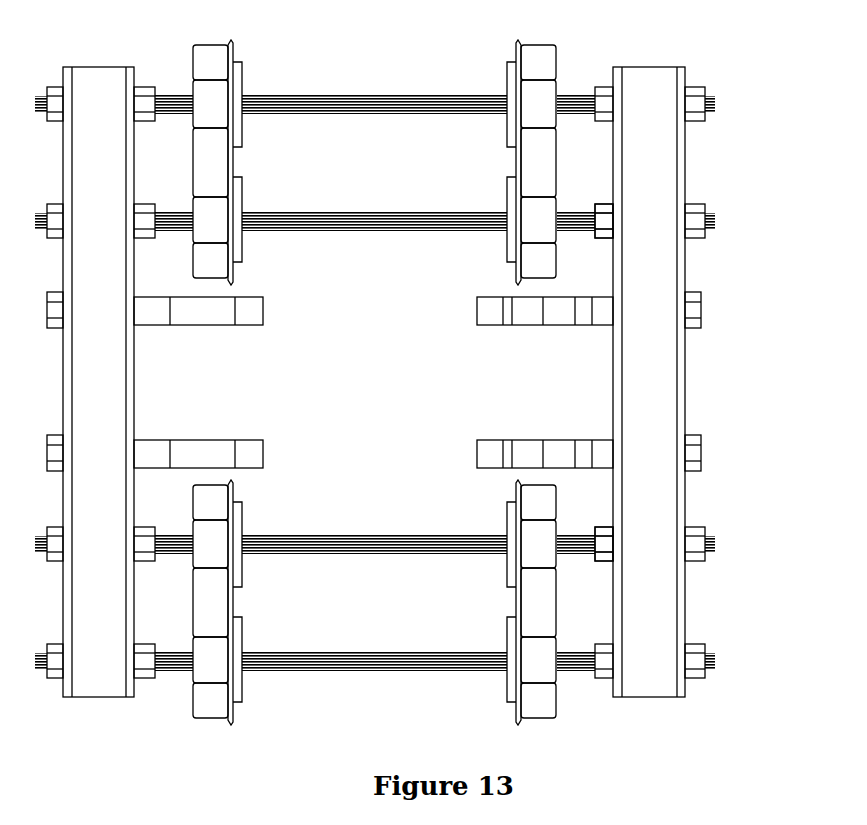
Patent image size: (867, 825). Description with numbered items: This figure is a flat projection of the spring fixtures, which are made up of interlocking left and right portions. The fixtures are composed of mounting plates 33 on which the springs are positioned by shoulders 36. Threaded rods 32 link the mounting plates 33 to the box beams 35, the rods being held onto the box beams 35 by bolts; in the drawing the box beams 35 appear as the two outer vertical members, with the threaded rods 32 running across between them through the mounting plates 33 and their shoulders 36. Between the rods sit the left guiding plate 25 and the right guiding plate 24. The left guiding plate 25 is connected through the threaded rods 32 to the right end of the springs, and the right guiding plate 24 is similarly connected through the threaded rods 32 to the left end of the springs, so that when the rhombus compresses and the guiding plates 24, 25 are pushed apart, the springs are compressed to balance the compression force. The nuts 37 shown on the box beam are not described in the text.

The right guiding plate 24 is at (503, 382).
The left guiding plate 25 is at (221, 382).
The threaded rods 32 is at (693, 382).
The mounting plates 33 is at (537, 166).
The box beams 35 is at (93, 98).
The shoulders 36 is at (512, 78).
The nut 37 is at (749, 381).